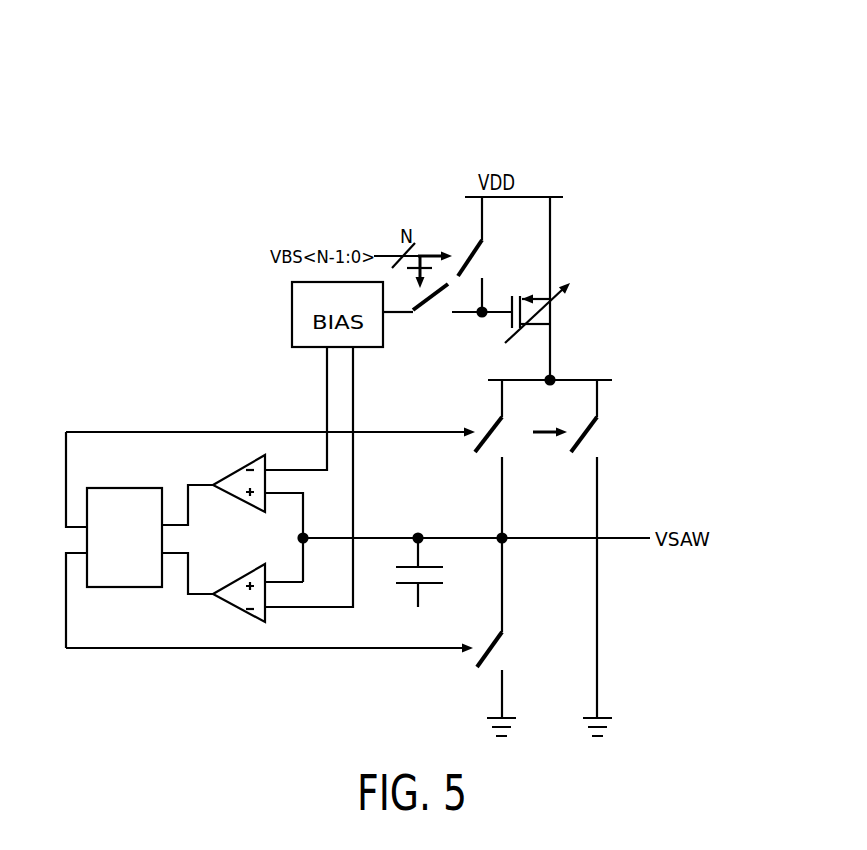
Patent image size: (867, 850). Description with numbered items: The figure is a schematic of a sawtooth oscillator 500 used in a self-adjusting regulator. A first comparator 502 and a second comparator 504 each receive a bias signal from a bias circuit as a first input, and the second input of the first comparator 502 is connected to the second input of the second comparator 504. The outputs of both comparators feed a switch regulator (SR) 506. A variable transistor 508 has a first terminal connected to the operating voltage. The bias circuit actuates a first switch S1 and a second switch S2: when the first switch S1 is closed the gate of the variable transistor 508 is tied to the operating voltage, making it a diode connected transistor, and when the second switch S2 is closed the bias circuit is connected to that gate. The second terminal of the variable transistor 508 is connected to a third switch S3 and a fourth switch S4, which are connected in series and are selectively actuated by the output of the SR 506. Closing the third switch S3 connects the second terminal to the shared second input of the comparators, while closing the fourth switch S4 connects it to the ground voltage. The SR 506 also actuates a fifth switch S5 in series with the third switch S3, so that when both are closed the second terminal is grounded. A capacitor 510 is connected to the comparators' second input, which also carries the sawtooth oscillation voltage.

The sawtooth oscillator 500 is at (398, 90).
The first comparator 502 is at (260, 457).
The second comparator 504 is at (252, 621).
The switch regulator (SR) 506 is at (128, 487).
The variable transistor 508 is at (582, 277).
The capacitor 510 is at (452, 573).
The first switch S1 is at (462, 245).
The second switch S2 is at (413, 294).
The third switch S3 is at (488, 420).
The fourth switch S4 is at (605, 435).
The fifth switch S5 is at (463, 665).